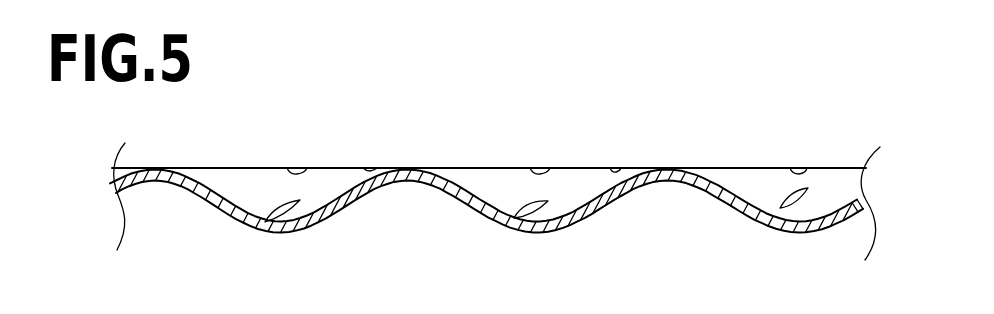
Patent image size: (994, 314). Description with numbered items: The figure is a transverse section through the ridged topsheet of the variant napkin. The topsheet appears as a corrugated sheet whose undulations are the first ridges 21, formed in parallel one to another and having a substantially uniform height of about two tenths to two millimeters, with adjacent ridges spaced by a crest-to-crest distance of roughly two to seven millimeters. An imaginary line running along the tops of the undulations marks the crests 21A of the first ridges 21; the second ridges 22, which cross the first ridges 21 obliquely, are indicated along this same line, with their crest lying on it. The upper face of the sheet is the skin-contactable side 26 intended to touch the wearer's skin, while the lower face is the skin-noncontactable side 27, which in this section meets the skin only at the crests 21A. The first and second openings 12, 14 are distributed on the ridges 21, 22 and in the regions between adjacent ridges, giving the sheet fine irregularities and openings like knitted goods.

The first openings 12 is at (255, 229).
The second openings 14 is at (152, 182).
The first ridges 21 is at (201, 182).
The crest of first ridge 21A is at (685, 167).
The second ridges 22 is at (468, 167).
The skin-contactable side 26 is at (842, 200).
The skin-noncontactable side 27 is at (841, 216).